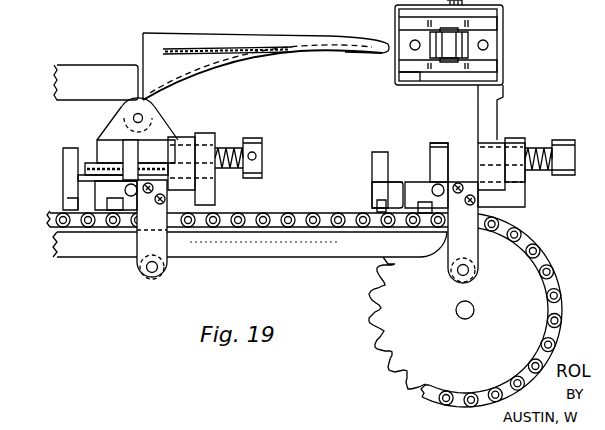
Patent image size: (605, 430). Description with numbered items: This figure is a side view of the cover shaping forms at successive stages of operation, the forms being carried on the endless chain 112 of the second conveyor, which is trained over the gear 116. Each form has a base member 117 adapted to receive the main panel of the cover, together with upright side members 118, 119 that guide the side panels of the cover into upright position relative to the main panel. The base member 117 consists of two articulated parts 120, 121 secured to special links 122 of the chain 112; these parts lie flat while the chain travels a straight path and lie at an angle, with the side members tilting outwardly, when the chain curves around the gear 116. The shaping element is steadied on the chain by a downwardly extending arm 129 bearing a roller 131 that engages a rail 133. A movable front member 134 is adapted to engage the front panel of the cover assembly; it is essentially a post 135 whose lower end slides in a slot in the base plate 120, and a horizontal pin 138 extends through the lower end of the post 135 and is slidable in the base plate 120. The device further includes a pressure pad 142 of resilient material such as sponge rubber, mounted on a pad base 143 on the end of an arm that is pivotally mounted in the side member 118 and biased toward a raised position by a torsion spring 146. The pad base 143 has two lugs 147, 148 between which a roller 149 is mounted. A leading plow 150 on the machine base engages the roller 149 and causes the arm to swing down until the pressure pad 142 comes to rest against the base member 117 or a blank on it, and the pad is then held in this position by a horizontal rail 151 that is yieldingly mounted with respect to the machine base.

The endless chain 112 is at (79, 232).
The gear 116 is at (378, 347).
The base member 117 is at (110, 187).
The upright side member 118 is at (208, 190).
The upright side member 119 is at (380, 160).
The articulated base part 120 is at (385, 188).
The articulated base part 121 is at (420, 190).
The special link 122 is at (422, 225).
The downwardly extending arm 129 is at (475, 253).
The roller 131 is at (168, 260).
The rail 133 is at (240, 250).
The movable front member 134 is at (432, 152).
The post 135 is at (130, 152).
The horizontal pin 138 is at (134, 196).
The pressure pad 142 is at (88, 160).
The pad base 143 is at (490, 54).
The torsion spring 146 is at (540, 170).
The lug 147 is at (490, 24).
The lug 148 is at (407, 66).
The roller 149 is at (460, 58).
The leading plow 150 is at (174, 72).
The horizontal rail 151 is at (98, 90).